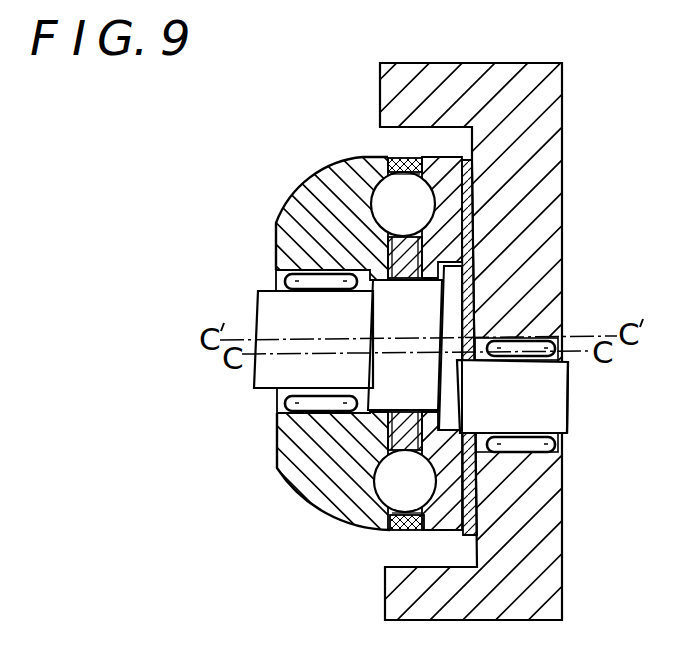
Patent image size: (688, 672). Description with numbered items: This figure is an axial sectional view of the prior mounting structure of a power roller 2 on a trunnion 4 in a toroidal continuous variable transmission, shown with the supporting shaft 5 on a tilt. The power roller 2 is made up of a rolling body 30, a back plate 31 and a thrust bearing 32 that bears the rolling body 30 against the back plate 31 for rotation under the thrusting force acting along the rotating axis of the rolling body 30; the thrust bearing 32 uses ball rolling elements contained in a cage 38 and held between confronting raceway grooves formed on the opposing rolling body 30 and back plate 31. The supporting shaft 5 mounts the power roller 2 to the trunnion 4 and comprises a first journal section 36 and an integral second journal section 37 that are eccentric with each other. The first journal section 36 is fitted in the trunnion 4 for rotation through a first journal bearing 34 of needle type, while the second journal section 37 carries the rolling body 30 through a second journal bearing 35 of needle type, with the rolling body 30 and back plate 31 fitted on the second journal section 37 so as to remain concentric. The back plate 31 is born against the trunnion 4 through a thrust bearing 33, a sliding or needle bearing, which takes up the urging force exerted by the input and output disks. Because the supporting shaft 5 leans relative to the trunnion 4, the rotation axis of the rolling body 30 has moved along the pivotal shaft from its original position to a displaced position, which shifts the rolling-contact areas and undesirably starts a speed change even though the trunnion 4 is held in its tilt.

The power roller 2 is at (292, 202).
The trunnion 4 is at (527, 251).
The supporting shaft 5 is at (572, 418).
The rolling body 30 is at (328, 478).
The back plate 31 is at (420, 158).
The thrust bearing 32 is at (377, 193).
The thrust bearing 33 is at (468, 213).
The first journal bearing 34 is at (560, 352).
The second journal bearing 35 is at (298, 283).
The first journal section 36 is at (553, 393).
The second journal section 37 is at (275, 315).
The cage 38 is at (387, 160).